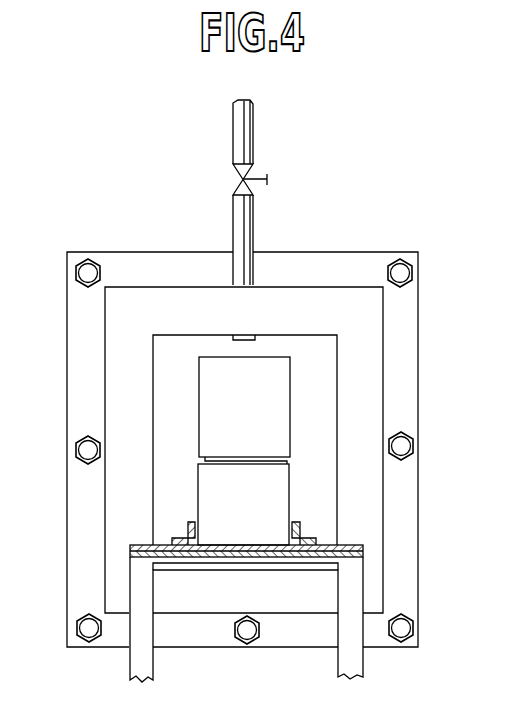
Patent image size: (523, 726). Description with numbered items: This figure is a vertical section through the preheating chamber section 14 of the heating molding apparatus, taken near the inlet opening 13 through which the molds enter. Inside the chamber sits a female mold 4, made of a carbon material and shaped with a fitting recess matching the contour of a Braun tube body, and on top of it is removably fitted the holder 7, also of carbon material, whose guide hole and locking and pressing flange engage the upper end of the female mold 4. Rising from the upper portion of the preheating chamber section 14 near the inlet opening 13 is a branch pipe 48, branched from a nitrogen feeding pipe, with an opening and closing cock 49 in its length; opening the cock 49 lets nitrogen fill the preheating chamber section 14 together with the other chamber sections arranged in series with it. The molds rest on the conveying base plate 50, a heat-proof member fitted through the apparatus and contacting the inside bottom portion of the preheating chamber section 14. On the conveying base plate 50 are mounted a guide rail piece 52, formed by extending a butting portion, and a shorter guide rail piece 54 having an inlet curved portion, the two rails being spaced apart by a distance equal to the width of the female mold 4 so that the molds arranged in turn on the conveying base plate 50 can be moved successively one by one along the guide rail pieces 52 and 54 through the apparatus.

The female mold 4 is at (205, 487).
The holder 7 is at (203, 384).
The inlet opening 13 is at (337, 384).
The preheating chamber section 14 is at (153, 287).
The branch pipe 48 is at (247, 222).
The opening and closing cock 49 is at (258, 176).
The conveying base plate 50 is at (270, 543).
The guide rail piece 52 is at (183, 524).
The guide rail piece 54 is at (300, 531).